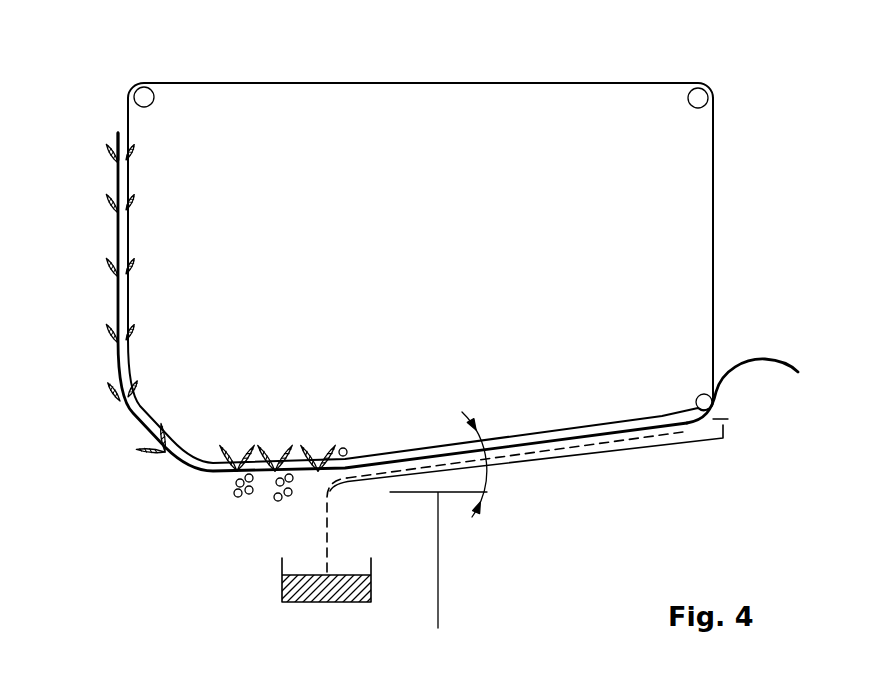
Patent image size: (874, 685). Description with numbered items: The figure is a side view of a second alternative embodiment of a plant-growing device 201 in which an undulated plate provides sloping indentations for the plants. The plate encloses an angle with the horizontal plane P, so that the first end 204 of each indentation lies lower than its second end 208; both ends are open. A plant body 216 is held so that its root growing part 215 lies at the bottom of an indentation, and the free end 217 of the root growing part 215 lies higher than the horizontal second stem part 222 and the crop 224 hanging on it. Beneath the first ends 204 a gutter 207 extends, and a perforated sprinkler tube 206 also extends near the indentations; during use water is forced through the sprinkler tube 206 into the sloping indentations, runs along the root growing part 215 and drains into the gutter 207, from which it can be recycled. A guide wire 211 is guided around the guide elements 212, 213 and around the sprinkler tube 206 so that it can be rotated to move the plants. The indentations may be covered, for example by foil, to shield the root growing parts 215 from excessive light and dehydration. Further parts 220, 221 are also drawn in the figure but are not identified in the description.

The device 201 is at (523, 76).
The guide wire 211 is at (713, 184).
The guide element 212 is at (144, 87).
The guide element 213 is at (698, 88).
The sprinkler tube 206 is at (699, 395).
The first end 204 is at (351, 442).
The fiber web 220 is at (118, 183).
The leading edge of fiber web 221 is at (118, 128).
The horizontal second stem part 222 is at (217, 473).
The crop 224 is at (240, 498).
The plant body 216 is at (116, 438).
The free end 217 is at (768, 352).
The root growing part 215 is at (583, 445).
The second end 208 is at (733, 419).
The gutter 207 is at (350, 602).
The horizontal plane P is at (438, 573).